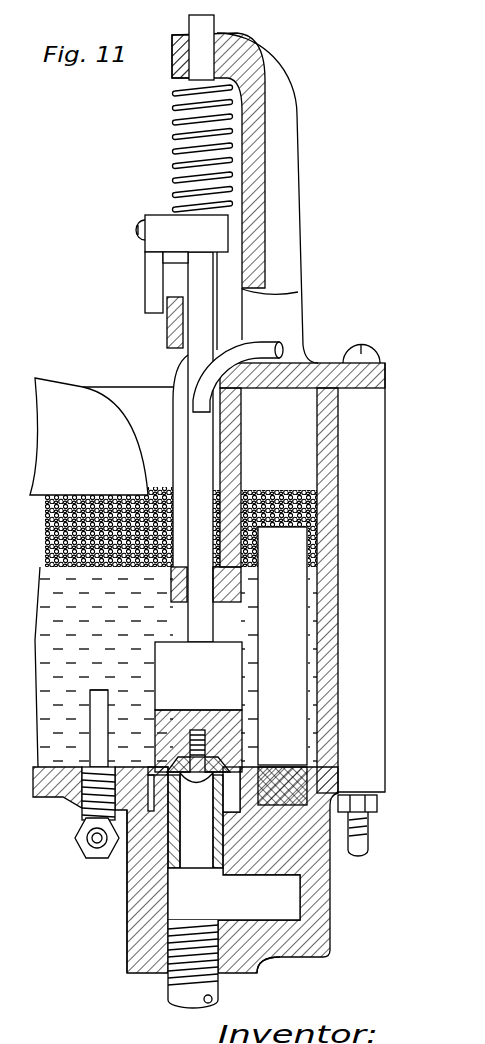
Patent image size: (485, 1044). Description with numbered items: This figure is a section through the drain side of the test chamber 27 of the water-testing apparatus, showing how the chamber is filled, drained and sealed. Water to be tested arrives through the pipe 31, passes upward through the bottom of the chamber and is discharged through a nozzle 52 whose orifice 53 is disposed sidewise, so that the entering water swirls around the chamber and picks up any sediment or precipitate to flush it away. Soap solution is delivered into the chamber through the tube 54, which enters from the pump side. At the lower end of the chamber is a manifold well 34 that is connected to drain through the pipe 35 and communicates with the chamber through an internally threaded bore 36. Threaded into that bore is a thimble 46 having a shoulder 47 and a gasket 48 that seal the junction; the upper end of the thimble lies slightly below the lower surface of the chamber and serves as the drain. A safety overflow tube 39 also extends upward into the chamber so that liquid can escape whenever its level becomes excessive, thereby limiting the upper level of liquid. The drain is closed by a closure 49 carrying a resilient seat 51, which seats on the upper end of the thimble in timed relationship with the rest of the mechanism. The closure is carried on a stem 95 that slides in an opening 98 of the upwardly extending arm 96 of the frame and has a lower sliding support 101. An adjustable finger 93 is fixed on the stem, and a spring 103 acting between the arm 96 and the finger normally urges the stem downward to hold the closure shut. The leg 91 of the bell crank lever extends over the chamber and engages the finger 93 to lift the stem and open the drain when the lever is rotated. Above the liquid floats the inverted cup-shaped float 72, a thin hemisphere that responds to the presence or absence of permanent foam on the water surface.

The test chamber 27 is at (128, 414).
The pipe 31 is at (82, 832).
The manifold well 34 is at (272, 912).
The drain pipe 35 is at (172, 997).
The internally threaded bore 36 is at (172, 900).
The safety overflow tube 39 is at (282, 646).
The thimble 46 is at (167, 860).
The shoulder 47 is at (158, 781).
The gasket 48 is at (167, 813).
The closure 49 is at (168, 668).
The resilient seat 51 is at (180, 758).
The nozzle 52 is at (102, 728).
The orifice 53 is at (92, 702).
The tube 54 is at (266, 347).
The float 72 is at (89, 436).
The leg of lever 91 is at (167, 327).
The adjustable finger 93 is at (150, 277).
The stem 95 is at (193, 328).
The arm 96 is at (282, 163).
The opening 98 is at (173, 62).
The lower sliding support 101 is at (168, 594).
The spring 103 is at (178, 112).